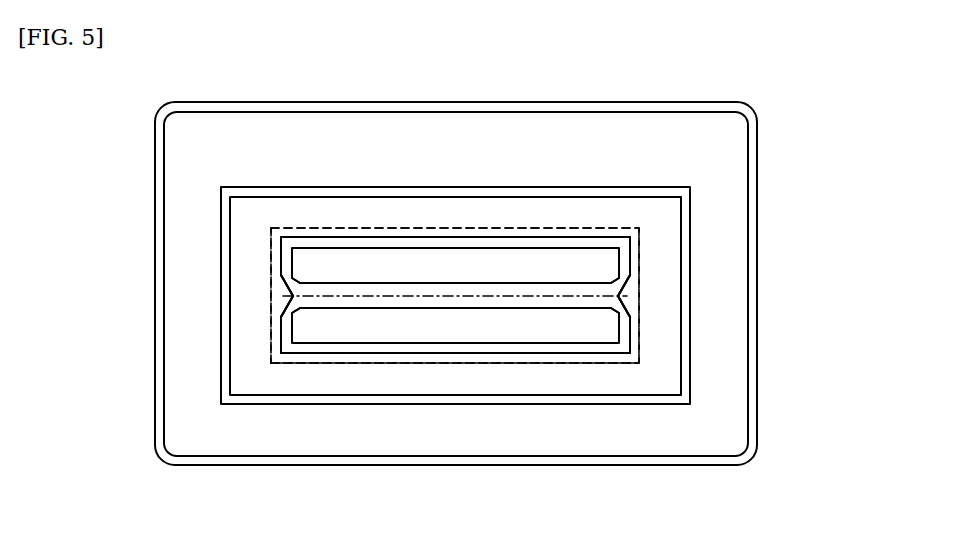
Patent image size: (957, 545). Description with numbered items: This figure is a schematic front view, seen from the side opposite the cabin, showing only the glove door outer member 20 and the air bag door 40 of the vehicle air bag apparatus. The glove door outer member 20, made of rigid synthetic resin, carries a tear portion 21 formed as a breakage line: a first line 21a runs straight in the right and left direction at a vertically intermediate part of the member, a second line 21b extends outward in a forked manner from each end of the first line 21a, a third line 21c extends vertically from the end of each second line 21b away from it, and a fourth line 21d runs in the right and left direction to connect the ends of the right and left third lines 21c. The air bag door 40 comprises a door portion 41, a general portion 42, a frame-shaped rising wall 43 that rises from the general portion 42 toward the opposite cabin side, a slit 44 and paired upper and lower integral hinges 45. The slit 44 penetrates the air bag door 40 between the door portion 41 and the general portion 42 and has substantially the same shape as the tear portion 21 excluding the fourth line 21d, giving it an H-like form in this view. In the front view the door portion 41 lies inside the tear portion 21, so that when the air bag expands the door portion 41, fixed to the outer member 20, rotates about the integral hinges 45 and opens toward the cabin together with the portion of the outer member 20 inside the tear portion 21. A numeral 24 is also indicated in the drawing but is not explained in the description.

The glove door outer member 20 is at (752, 417).
The tear portion 21 is at (308, 228).
The first line 21a is at (462, 297).
The second line 21b is at (281, 298).
The third line 21c is at (271, 263).
The fourth line 21d is at (352, 228).
The bottom portion 24 is at (503, 363).
The air bag door 40 is at (491, 298).
The door portion 41 is at (588, 270).
The general portion 42 is at (687, 158).
The rising wall 43 is at (687, 213).
The slit 44 is at (627, 250).
The integral hinge 45 is at (562, 245).